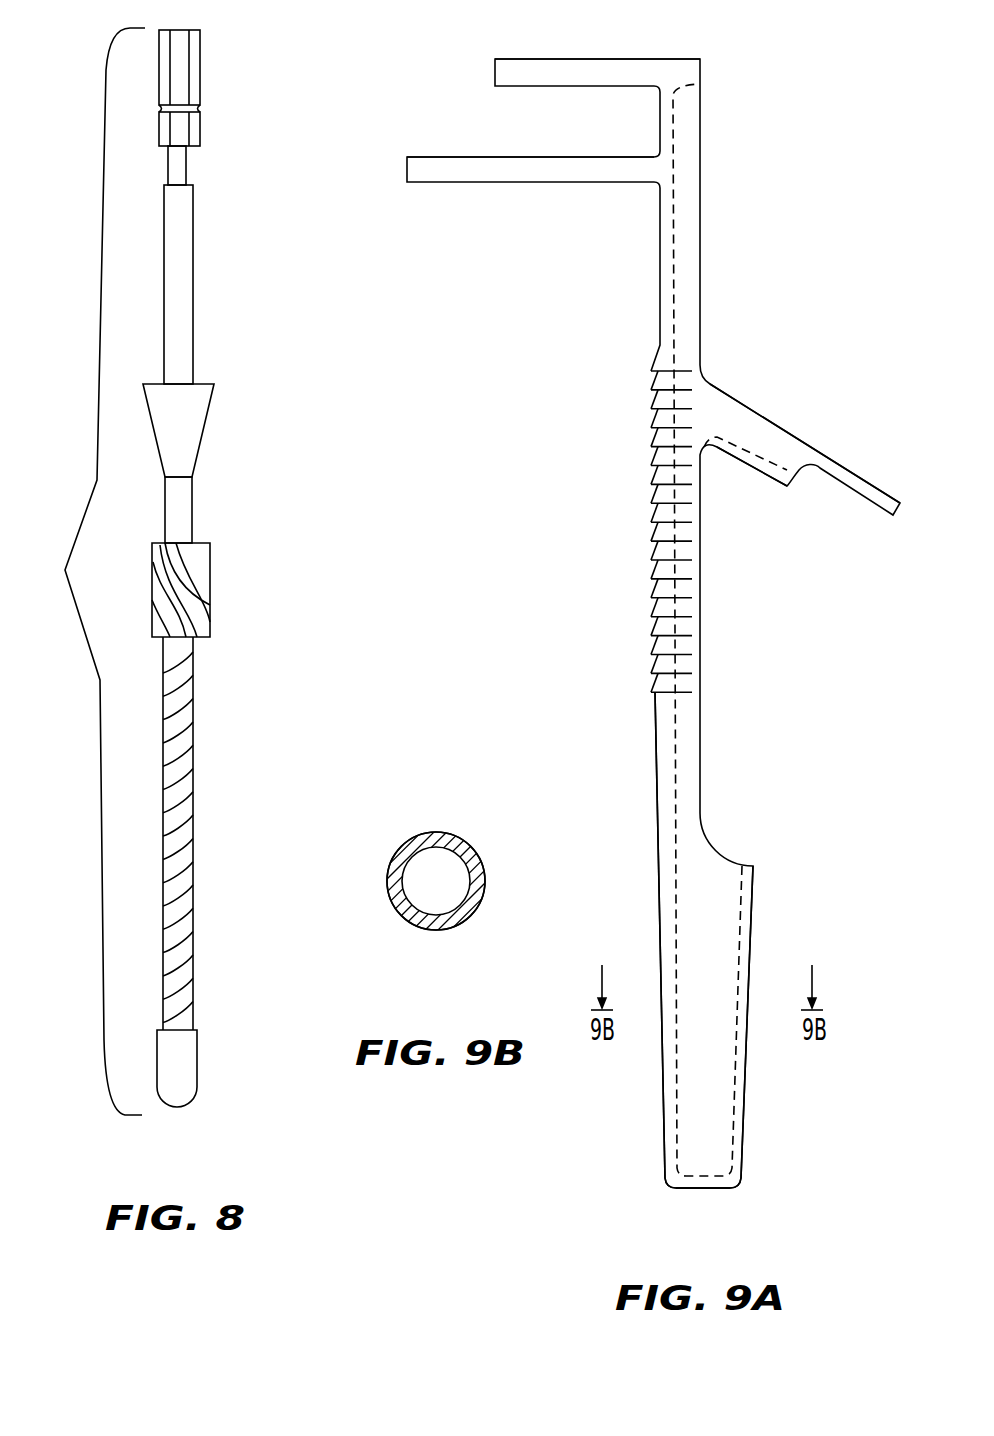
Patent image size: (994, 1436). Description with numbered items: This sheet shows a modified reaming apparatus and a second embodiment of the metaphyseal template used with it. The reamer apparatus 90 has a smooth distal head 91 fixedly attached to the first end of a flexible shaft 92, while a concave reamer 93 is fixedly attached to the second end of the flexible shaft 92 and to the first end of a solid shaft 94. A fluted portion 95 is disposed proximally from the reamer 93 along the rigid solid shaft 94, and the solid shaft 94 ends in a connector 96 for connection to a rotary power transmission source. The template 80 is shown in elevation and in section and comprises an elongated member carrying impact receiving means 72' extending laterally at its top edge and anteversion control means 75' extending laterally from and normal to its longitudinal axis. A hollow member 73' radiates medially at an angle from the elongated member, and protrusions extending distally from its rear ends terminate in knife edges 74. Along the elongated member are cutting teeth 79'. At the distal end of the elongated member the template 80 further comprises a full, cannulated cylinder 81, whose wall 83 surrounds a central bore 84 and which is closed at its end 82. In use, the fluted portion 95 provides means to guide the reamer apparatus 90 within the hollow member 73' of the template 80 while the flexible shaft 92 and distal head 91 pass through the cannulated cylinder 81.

In FIG. 8, the reamer apparatus 90 is at (88, 571).
In FIG. 8, the distal head 91 is at (184, 1073).
In FIG. 8, the flexible shaft 92 is at (184, 827).
In FIG. 8, the concave reamer 93 is at (200, 577).
In FIG. 8, the solid shaft 94 is at (183, 518).
In FIG. 8, the fluted portion 95 is at (190, 443).
In FIG. 8, the connector 96 is at (194, 55).
In FIG. 9A, the impact receiving means 72' is at (597, 36).
In FIG. 9A, the anteversion control means 75' is at (530, 206).
In FIG. 9A, the template 80 is at (616, 346).
In FIG. 9A, the ratchet teeth 79' is at (719, 513).
In FIG. 9A, the hollow member 73' is at (805, 443).
In FIG. 9A, the knife edges 74 is at (767, 475).
In FIG. 9A, the sheath wall 83 is at (667, 900).
In FIG. 9B, the sheath wall 83 is at (394, 867).
In FIG. 9A, the bore 84 is at (725, 940).
In FIG. 9B, the bore 84 is at (458, 893).
In FIG. 9A, the cannulated cylinder 81 is at (760, 1134).
In FIG. 9B, the cannulated cylinder 81 is at (494, 866).
In FIG. 9A, the closed end 82 is at (718, 1186).